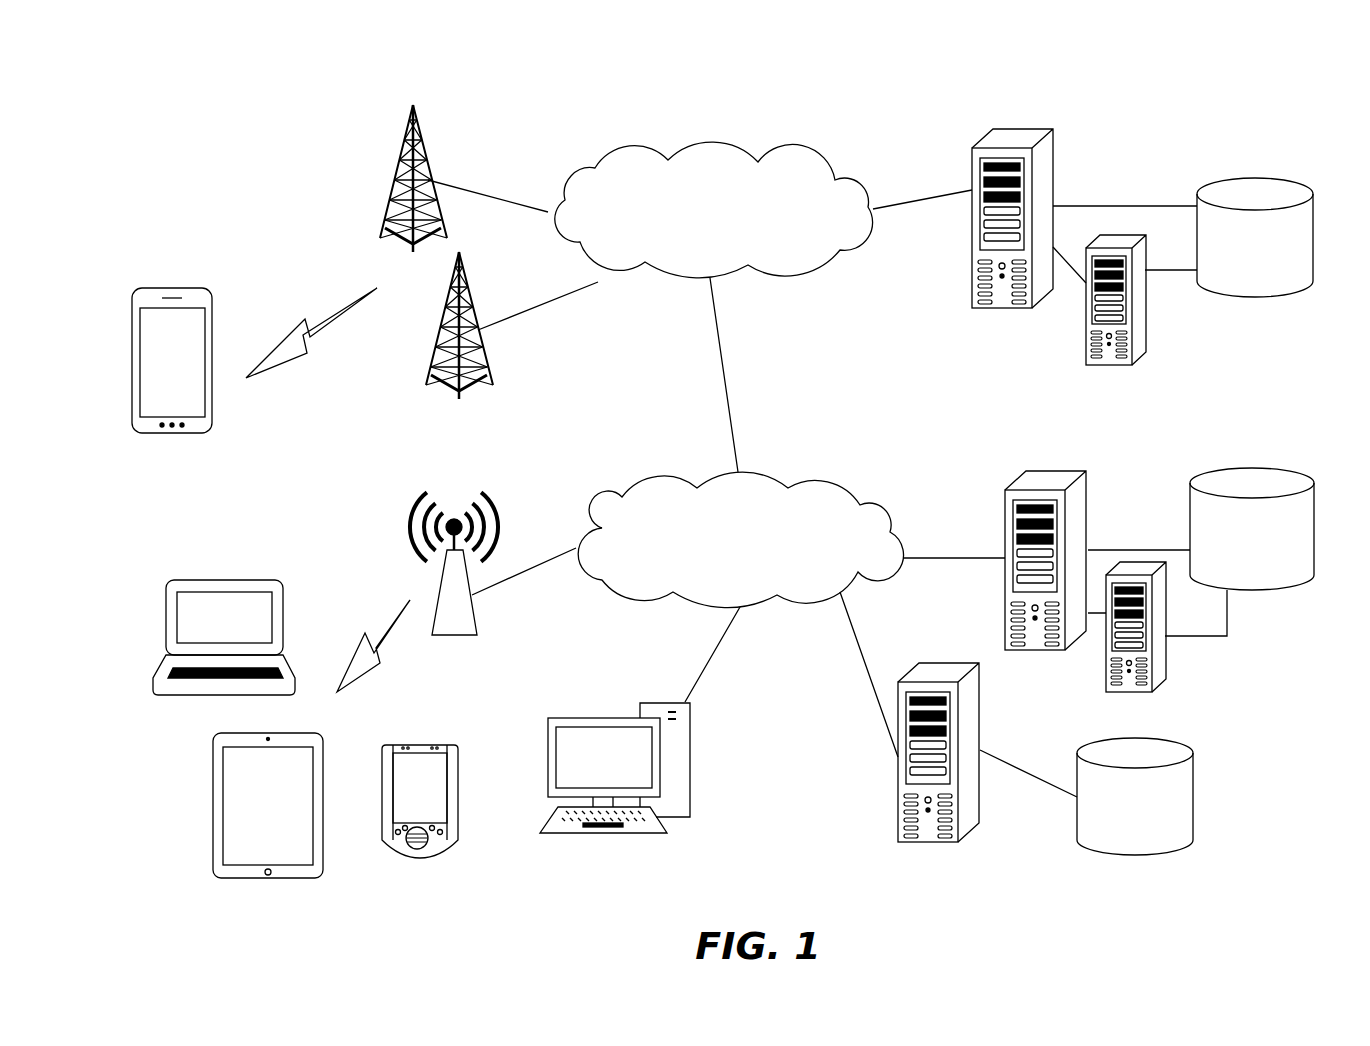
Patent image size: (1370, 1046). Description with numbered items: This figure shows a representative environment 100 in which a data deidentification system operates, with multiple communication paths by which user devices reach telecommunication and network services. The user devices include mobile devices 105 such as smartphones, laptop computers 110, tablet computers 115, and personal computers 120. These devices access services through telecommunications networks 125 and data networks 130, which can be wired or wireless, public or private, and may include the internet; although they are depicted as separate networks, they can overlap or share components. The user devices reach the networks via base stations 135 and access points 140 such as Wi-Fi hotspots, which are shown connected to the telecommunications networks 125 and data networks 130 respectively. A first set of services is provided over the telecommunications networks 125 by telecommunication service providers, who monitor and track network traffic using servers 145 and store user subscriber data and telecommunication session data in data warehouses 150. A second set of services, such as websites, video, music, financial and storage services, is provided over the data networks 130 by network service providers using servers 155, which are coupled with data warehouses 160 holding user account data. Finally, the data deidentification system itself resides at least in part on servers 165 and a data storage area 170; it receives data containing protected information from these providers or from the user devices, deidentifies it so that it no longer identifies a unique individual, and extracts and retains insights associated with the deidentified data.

The environment 100 is at (1304, 104).
The mobile devices 105 is at (165, 288).
The laptop computers 110 is at (168, 625).
The tablet computers 115 is at (213, 810).
The personal computers 120 is at (600, 835).
The telecommunications networks 125 is at (703, 140).
The data networks 130 is at (816, 478).
The base stations 135 is at (423, 152).
The access points 140 is at (480, 622).
The servers 145 is at (973, 148).
The data warehouses 150 is at (1244, 178).
The servers 155 is at (1012, 512).
The data warehouses 160 is at (1257, 590).
The servers 165 is at (962, 843).
The data storage area 170 is at (1172, 856).